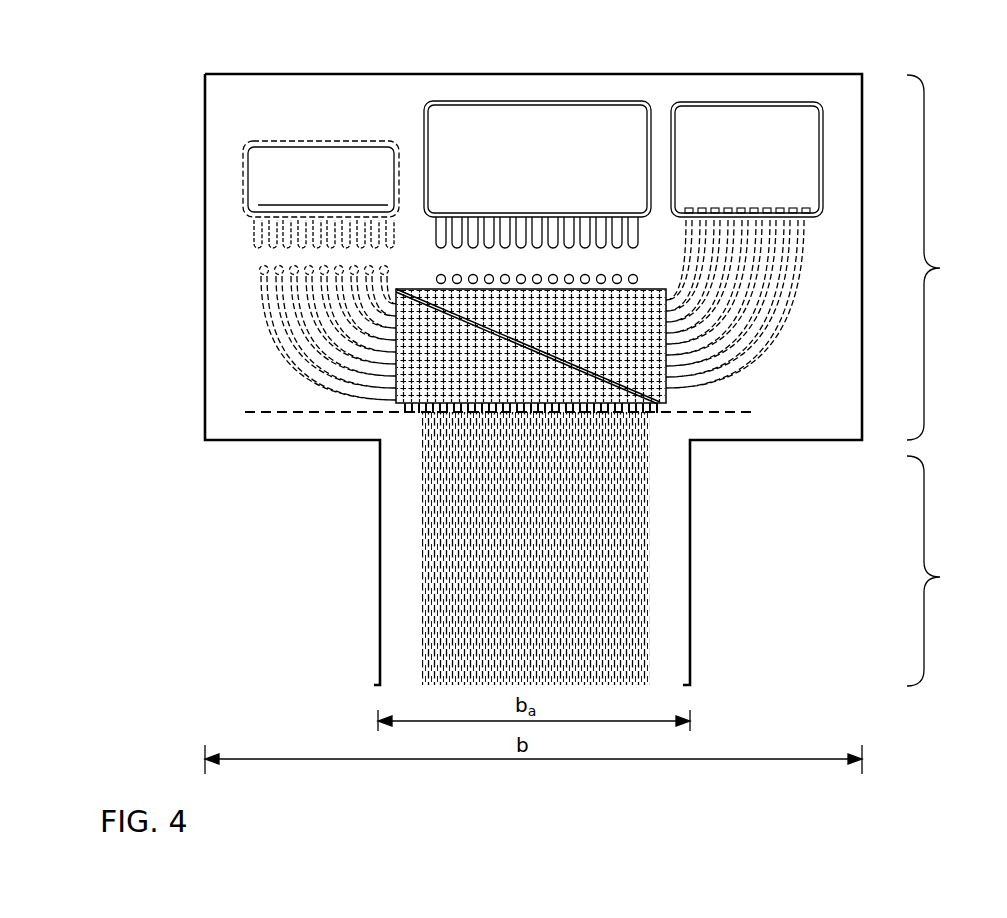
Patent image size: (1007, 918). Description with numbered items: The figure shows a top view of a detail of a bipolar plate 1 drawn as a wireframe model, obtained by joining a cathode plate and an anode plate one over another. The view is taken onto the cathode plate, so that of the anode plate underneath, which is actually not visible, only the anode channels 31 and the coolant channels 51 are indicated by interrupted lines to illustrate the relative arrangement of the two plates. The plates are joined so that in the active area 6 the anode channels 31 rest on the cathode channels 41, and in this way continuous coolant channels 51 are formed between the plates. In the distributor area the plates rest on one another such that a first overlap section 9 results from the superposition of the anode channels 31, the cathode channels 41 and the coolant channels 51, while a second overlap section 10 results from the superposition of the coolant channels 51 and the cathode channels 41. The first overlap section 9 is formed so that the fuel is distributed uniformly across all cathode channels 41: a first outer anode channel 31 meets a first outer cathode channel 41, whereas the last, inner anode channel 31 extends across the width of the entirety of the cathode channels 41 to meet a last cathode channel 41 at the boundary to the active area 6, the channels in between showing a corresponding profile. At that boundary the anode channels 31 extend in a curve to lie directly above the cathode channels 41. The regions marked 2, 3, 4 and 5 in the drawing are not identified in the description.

The bipolar plate 1 is at (945, 79).
The first region (component carrier region) 2 is at (932, 257).
The first electronic component 3 is at (316, 162).
The second electronic component 4 is at (553, 120).
The third electronic component 5 is at (754, 160).
The active area 6 is at (932, 571).
The first overlap section 9 is at (394, 402).
The second overlap section 10 is at (652, 287).
The anode channels 31 is at (273, 296).
The cathode channels 41 is at (426, 289).
The coolant channels 51 is at (810, 234).